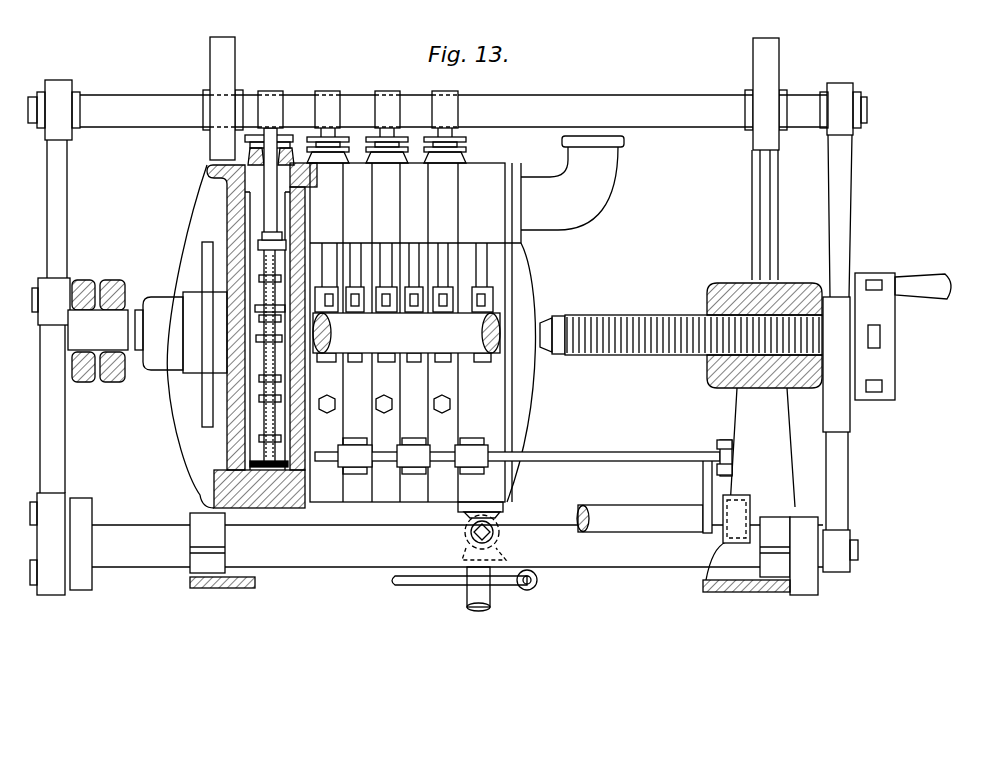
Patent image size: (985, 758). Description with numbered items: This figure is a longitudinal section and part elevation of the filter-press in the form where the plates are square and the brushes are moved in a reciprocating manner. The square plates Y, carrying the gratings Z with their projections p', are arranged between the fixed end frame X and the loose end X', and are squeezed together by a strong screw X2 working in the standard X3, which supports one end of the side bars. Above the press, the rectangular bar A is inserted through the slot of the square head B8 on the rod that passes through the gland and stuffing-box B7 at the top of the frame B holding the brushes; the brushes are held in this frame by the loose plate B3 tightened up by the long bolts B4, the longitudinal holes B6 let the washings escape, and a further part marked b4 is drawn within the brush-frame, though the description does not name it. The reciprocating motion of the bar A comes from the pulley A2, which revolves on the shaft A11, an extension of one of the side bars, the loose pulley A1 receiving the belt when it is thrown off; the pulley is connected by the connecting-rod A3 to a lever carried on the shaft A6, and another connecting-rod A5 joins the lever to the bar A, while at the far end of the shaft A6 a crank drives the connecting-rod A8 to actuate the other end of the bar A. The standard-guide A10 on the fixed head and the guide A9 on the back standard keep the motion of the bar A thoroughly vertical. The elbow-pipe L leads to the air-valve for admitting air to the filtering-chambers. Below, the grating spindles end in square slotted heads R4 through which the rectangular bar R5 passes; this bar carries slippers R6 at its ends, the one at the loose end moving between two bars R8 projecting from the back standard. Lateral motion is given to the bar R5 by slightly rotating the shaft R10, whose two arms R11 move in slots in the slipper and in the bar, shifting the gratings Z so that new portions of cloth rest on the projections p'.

The rectangular bar A is at (447, 110).
The loose pulley A1 is at (120, 280).
The pulley A2 is at (103, 280).
The connecting-rod A3 is at (59, 460).
The connecting-rod A5 is at (42, 258).
The shaft A6 is at (446, 546).
The connecting-rod A8 is at (843, 490).
The guide A9 is at (767, 137).
The standard-guide A10 is at (218, 70).
The shaft A11 is at (147, 332).
The frame B is at (270, 390).
The loose plate B3 is at (316, 350).
The long bolts B4 is at (258, 338).
The longitudinal holes B6 is at (270, 109).
The gland and stuffing-box B7 is at (279, 165).
The square head B8 is at (445, 96).
The pin b4 is at (260, 250).
The pistons e is at (404, 306).
The elbow-pipe L is at (572, 183).
The projections p' is at (249, 345).
The square slotted head R4 is at (413, 456).
The rectangular bar R5 is at (320, 452).
The slippers R6 is at (718, 448).
The bars R8 is at (733, 443).
The shaft R10 is at (606, 507).
The arms or levers R11 is at (705, 490).
The fixed end frame X is at (242, 335).
The loose end X' is at (423, 337).
The screw X2 is at (652, 316).
The standard X3 is at (764, 395).
The plates Y is at (386, 139).
The gratings Z is at (287, 223).